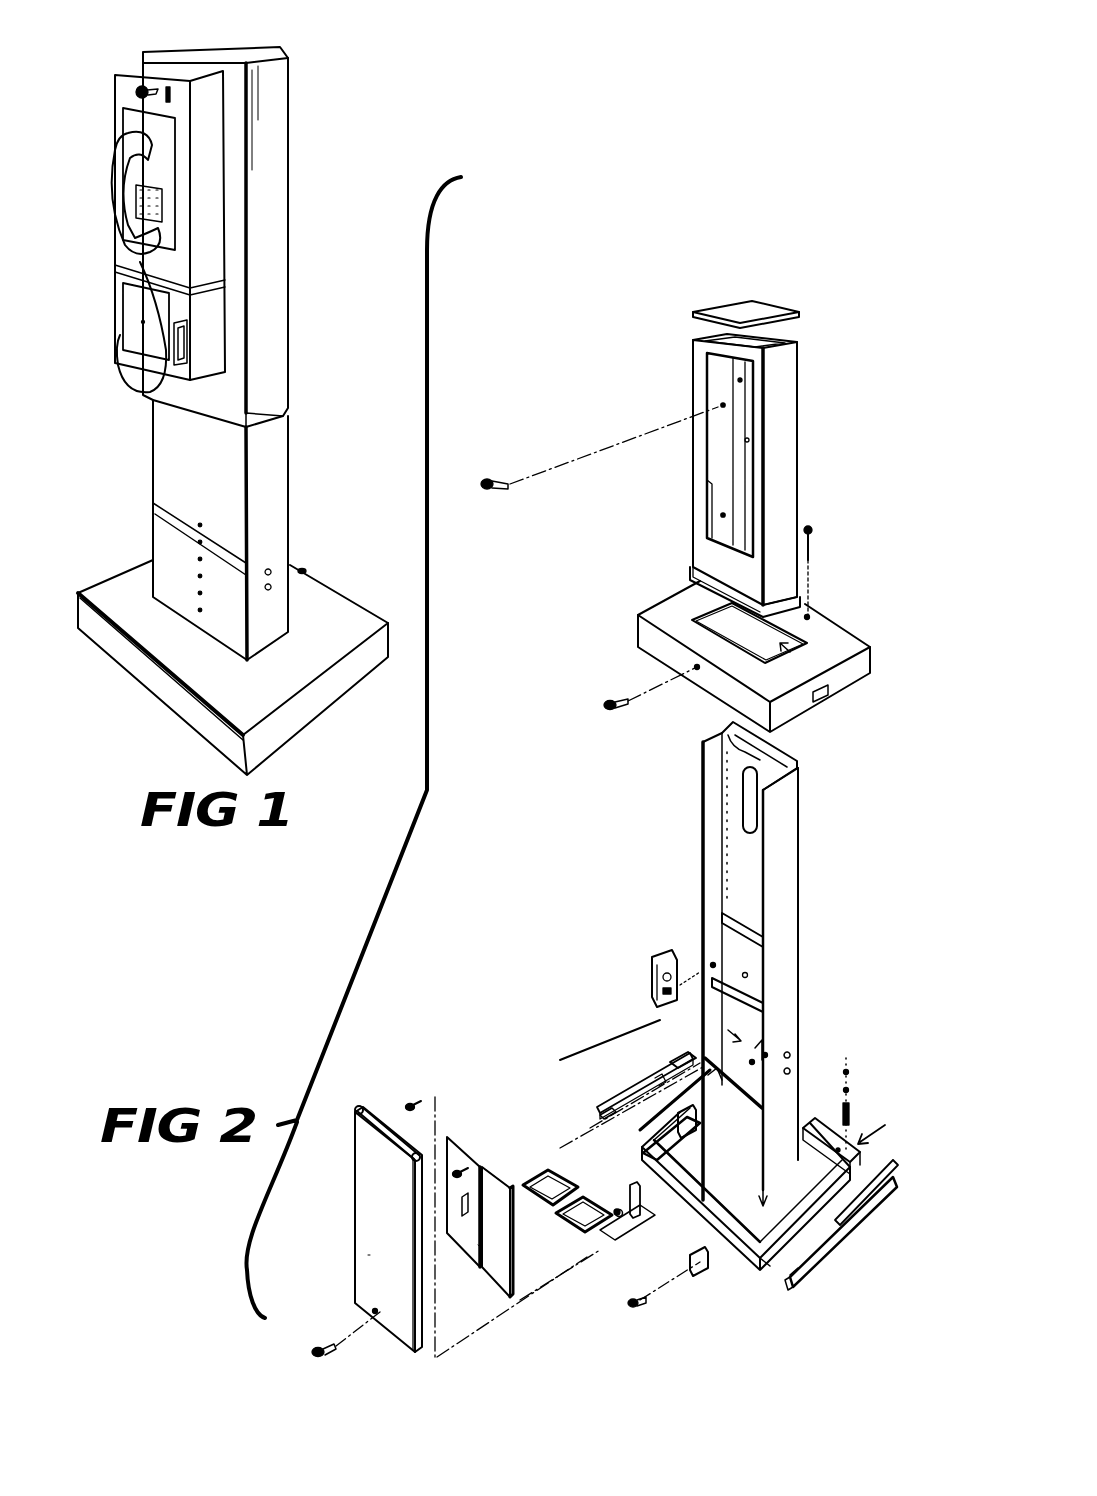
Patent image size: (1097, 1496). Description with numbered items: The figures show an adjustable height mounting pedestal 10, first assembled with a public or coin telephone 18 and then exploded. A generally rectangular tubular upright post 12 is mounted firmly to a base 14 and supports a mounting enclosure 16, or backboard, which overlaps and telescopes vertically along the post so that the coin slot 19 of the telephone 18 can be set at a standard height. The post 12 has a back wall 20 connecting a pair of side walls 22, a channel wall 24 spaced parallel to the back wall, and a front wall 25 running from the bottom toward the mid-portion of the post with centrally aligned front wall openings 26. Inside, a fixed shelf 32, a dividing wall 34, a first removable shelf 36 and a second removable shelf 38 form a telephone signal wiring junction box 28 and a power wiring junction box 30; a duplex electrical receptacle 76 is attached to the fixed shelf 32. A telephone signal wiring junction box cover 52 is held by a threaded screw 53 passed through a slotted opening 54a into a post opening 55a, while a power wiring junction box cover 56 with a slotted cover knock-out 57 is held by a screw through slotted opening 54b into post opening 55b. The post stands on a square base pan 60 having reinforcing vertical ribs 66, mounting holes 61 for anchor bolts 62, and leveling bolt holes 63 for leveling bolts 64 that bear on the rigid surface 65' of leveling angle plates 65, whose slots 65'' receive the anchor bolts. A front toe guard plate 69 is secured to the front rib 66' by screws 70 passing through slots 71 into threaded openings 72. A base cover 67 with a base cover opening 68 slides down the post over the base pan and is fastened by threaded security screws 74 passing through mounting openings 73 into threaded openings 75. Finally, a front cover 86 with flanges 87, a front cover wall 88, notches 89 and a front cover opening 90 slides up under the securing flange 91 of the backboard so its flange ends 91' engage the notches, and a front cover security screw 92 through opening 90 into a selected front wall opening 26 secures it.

In FIG. 1, the adjustable height mounting pedestal 10 is at (61, 316).
In FIG. 2, the adjustable height mounting pedestal 10 is at (462, 695).
In FIG. 1, the upright post 12 is at (280, 485).
In FIG. 2, the upright post 12 is at (800, 925).
In FIG. 1, the base 14 is at (113, 577).
In FIG. 1, the mounting enclosure 16 is at (281, 157).
In FIG. 2, the mounting enclosure 16 is at (793, 435).
In FIG. 1, the telephone 18 is at (107, 153).
In FIG. 1, the coin slot 19 is at (144, 60).
In FIG. 2, the back wall 20 is at (782, 752).
In FIG. 2, the side walls 22 is at (712, 810).
In FIG. 2, the channel wall 24 is at (797, 767).
In FIG. 2, the front wall 25 is at (685, 1068).
In FIG. 2, the front wall openings 26 is at (625, 1100).
In FIG. 2, the telephone signal wiring junction box 28 is at (786, 1052).
In FIG. 2, the power wiring junction box 30 is at (730, 1037).
In FIG. 2, the fixed shelf 32 is at (747, 1000).
In FIG. 2, the dividing wall 34 is at (786, 1070).
In FIG. 2, the first removable shelf 36 is at (615, 1240).
In FIG. 2, the second removable shelf 38 is at (553, 1173).
In FIG. 2, the telephone signal wiring junction box cover 52 is at (502, 1242).
In FIG. 2, the threaded screw 53 is at (408, 1103).
In FIG. 2, the slotted opening 54a is at (493, 1170).
In FIG. 2, the slotted opening 54b is at (455, 1137).
In FIG. 2, the post opening 55a is at (765, 1045).
In FIG. 2, the post opening 55b is at (760, 1040).
In FIG. 2, the power wiring junction box cover 56 is at (480, 1245).
In FIG. 2, the slotted cover knock-out 57 is at (460, 1213).
In FIG. 2, the base pan 60 is at (900, 1128).
In FIG. 2, the mounting holes 61 is at (760, 1262).
In FIG. 2, the anchor bolts 62 is at (850, 1118).
In FIG. 2, the leveling bolt holes 63 is at (740, 1250).
In FIG. 2, the leveling bolts 64 is at (835, 1185).
In FIG. 2, the leveling angle plate 65 is at (850, 1233).
In FIG. 2, the rigid surface 65' is at (736, 1116).
In FIG. 2, the slots 65'' is at (843, 1268).
In FIG. 2, the structural reinforcing vertical ribs 66 is at (688, 1132).
In FIG. 2, the front rib 66' is at (678, 1264).
In FIG. 2, the base cover 67 is at (842, 682).
In FIG. 2, the base cover opening 68 is at (800, 648).
In FIG. 2, the front toe guard plate 69 is at (700, 1200).
In FIG. 2, the screws 70 is at (615, 1200).
In FIG. 2, the slots 71 is at (615, 1208).
In FIG. 2, the threaded openings 72 is at (625, 1150).
In FIG. 2, the mounting openings 73 is at (808, 616).
In FIG. 2, the threaded security screw 74 is at (810, 555).
In FIG. 2, the threaded openings 75 is at (637, 1218).
In FIG. 2, the duplex electrical receptacle 76 is at (655, 960).
In FIG. 2, the front cover 86 is at (357, 1232).
In FIG. 2, the flanges 87 is at (356, 1108).
In FIG. 2, the front cover wall 88 is at (368, 1255).
In FIG. 2, the notches 89 is at (400, 1147).
In FIG. 2, the front cover opening 90 is at (372, 1311).
In FIG. 2, the securing flange 91 is at (724, 591).
In FIG. 2, the flange ends 91' is at (826, 582).
In FIG. 2, the front cover security screw 92 is at (322, 1357).